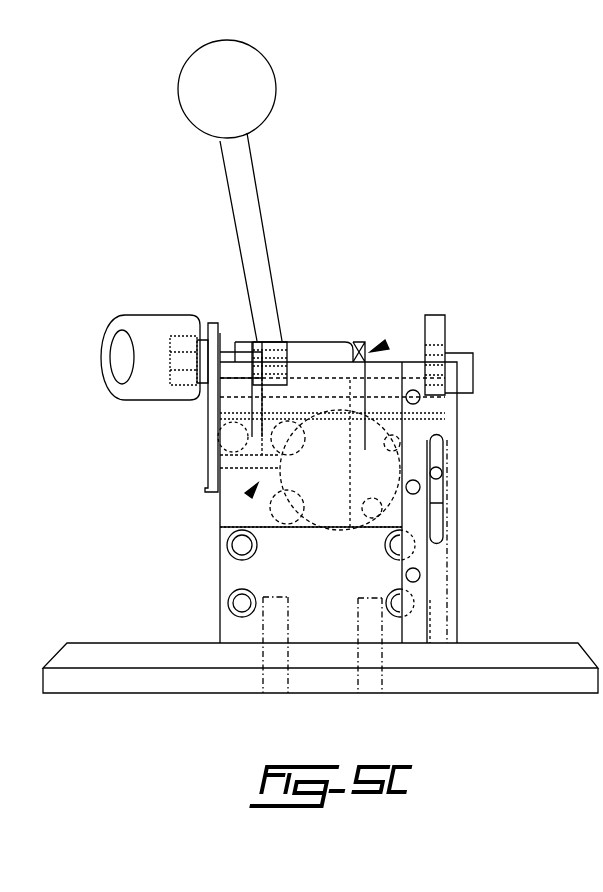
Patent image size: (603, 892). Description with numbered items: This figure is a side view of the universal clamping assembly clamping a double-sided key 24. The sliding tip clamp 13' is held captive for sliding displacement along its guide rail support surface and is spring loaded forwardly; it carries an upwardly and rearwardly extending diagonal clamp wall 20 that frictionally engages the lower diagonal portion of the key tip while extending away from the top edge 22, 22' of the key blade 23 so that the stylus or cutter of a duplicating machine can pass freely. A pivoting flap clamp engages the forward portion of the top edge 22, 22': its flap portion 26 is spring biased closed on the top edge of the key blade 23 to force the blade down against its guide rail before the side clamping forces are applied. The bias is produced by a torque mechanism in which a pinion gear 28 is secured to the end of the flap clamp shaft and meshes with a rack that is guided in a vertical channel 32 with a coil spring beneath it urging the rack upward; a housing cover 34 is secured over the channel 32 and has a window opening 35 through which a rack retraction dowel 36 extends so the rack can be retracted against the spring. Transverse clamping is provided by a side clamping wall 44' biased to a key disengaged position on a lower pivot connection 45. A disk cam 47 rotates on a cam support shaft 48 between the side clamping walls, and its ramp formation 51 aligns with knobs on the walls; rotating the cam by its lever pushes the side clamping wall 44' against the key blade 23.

The sliding tip clamp 13' is at (460, 353).
The diagonal clamp wall 20 is at (378, 348).
The top edge 22 is at (300, 325).
The top edge 22' is at (193, 365).
The key blade 23 is at (350, 340).
The key 24 is at (146, 380).
The flap portion 26 is at (276, 341).
The pinion gear 28 is at (473, 358).
The vertical channel 32 is at (437, 612).
The housing cover 34 is at (458, 425).
The window opening 35 is at (440, 460).
The rack retraction dowel 36 is at (443, 471).
The side clamping wall 44' is at (296, 488).
The lower pivot connection 45 is at (268, 508).
The disk cam 47 is at (242, 504).
The cam support shaft 48 is at (240, 431).
The ramp formation 51 is at (216, 460).